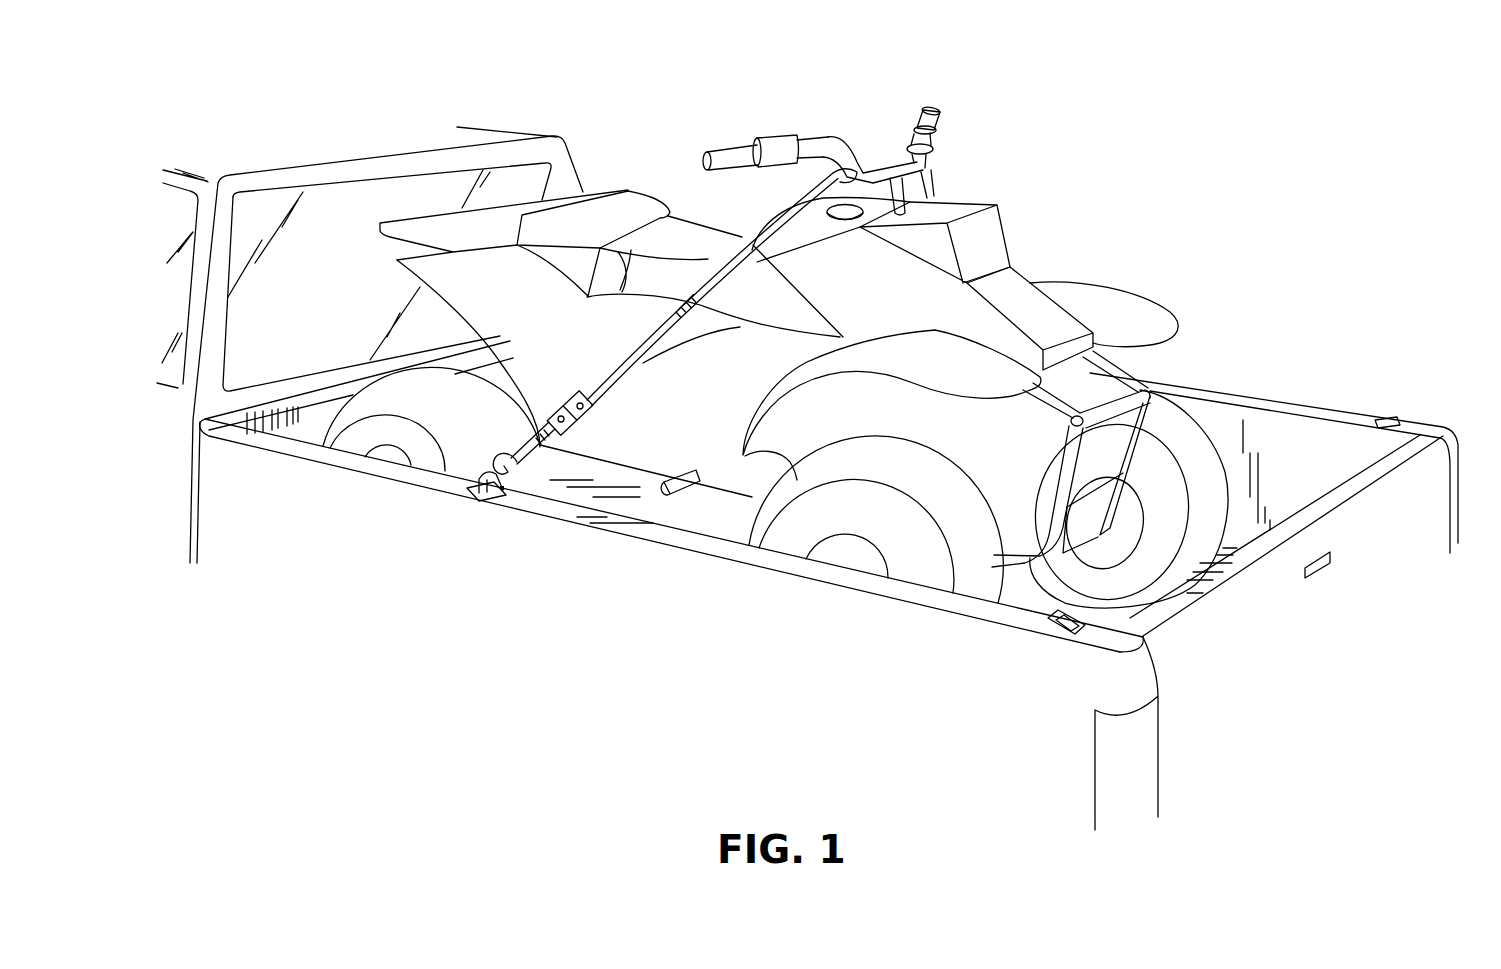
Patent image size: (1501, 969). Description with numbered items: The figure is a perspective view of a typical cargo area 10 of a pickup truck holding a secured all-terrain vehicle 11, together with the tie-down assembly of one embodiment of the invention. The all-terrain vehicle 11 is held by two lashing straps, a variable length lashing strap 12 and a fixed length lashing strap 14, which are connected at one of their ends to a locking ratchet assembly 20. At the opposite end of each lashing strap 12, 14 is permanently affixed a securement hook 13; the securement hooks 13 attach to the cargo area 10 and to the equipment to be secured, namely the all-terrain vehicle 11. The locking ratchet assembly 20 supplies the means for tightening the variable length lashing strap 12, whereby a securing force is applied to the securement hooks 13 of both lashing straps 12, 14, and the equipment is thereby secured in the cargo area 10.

The cargo area 10 is at (1293, 440).
The all-terrain vehicle 11 is at (1028, 285).
The variable length lashing strap 12 is at (748, 246).
The securement hook 13 is at (510, 490).
The fixed length lashing strap 14 is at (543, 462).
The locking ratchet assembly 20 is at (594, 390).